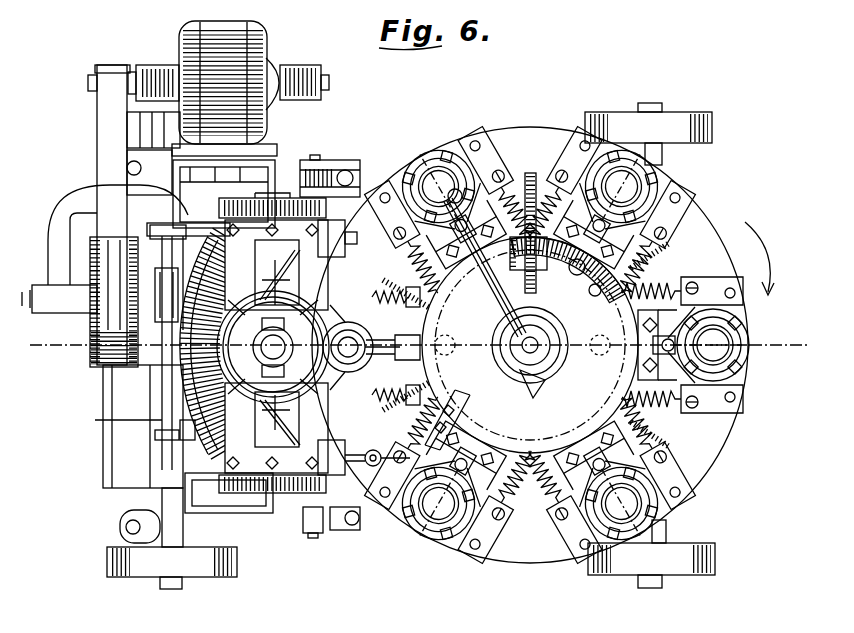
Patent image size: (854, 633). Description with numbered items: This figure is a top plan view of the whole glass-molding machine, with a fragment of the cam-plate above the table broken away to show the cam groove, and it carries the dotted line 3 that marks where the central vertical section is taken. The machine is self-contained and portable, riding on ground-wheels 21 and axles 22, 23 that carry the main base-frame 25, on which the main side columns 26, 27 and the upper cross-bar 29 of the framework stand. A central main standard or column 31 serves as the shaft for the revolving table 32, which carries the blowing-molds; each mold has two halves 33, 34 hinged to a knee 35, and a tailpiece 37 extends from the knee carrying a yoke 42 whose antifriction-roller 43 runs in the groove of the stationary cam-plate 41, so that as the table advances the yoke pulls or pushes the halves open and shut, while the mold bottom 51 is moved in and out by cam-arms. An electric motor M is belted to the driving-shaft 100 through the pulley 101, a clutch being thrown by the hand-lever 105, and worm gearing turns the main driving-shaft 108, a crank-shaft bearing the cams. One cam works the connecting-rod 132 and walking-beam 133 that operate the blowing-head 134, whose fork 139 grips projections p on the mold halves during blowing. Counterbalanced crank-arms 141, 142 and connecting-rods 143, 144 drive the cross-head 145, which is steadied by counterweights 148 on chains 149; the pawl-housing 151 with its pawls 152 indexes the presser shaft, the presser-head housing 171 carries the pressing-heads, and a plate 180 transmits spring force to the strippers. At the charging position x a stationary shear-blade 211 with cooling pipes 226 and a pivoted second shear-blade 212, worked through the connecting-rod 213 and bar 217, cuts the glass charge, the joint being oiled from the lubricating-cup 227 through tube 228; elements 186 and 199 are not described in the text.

The dotted line 3 3 is at (795, 360).
The ground-wheels 21 is at (706, 596).
The axle 22 is at (171, 589).
The axle 23 is at (650, 600).
The main base-frame 25 is at (103, 447).
The main side column 26 is at (145, 490).
The main side column 27 is at (147, 222).
The upper cross-bar 29 is at (230, 352).
The central main standard or column 31 is at (508, 353).
The revolving table 32 is at (720, 453).
The mold half 33 is at (735, 320).
The mold half 34 is at (735, 368).
The knee 35 is at (609, 481).
The tailpiece 37 is at (540, 225).
The stationary cam-plate 41 is at (530, 345).
The yoke 42 is at (567, 286).
The antifriction-roller 43 is at (609, 209).
The mold bottom 51 is at (730, 350).
The driving-shaft 100 is at (30, 280).
The pulley 101 is at (92, 360).
The hand-lever 105 is at (760, 280).
The main driving-shaft 108 is at (272, 493).
The connecting-rod 132 is at (524, 392).
The walking-beam 133 is at (395, 257).
The blowing-head 134 is at (430, 180).
The fork 139 is at (437, 150).
The crank-arm 141 is at (205, 513).
The crank-arm 142 is at (293, 193).
The connecting-rod 143 is at (345, 530).
The connecting-rod 144 is at (330, 160).
The cross-head 145 is at (313, 538).
The counterweights 148 is at (218, 205).
The chains or cords 149 is at (250, 493).
The pawl-housing 151 is at (185, 430).
The pawls 152 is at (352, 280).
The presser-head housing 171 is at (100, 348).
The plate 180 is at (400, 400).
The upper spring 186 is at (400, 290).
The rod 199 is at (111, 420).
The stationary shear-blade 211 is at (400, 510).
The second shear-blade 212 is at (452, 535).
The connecting-rod 213 is at (440, 535).
The bar 217 is at (400, 490).
The pipes 226 is at (405, 520).
The lubricating-cup 227 is at (366, 450).
The tube 228 is at (450, 411).
The electric motor M is at (268, 30).
The projections p is at (793, 382).
The position x is at (411, 565).